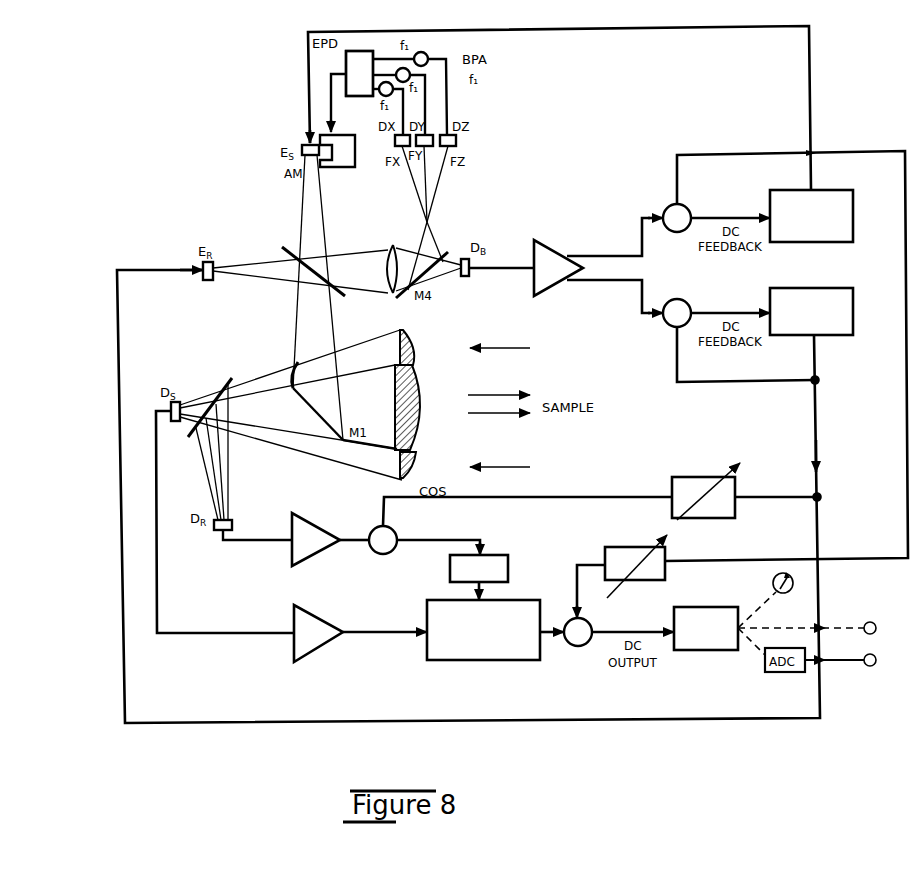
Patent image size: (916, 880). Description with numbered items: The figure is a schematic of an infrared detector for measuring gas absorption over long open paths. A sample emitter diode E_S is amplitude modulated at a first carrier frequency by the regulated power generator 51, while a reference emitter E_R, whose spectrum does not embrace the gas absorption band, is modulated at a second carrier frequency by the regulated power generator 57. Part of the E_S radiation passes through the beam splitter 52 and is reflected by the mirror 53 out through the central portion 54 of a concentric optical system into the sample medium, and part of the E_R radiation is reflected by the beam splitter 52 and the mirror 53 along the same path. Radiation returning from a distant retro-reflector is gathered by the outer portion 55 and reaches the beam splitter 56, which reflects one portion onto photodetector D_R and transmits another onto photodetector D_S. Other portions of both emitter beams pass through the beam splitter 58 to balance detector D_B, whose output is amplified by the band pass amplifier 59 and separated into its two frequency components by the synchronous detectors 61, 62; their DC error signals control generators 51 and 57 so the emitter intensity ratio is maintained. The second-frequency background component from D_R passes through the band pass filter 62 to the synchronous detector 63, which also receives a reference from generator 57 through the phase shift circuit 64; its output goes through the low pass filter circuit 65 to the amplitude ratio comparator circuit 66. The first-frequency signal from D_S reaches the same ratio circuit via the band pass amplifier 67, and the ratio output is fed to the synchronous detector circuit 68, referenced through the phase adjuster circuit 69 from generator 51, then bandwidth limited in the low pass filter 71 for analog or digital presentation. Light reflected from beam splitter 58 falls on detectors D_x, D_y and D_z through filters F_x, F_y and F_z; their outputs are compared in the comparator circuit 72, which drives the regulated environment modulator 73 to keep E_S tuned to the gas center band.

The regulated power generator 51 is at (786, 186).
The beam splitter 52 is at (293, 249).
The mirror 53 is at (289, 365).
The central portion of concentric optical system 54 is at (420, 442).
The outer portion of concentric optical system 55 is at (422, 341).
The beam splitter 56 is at (222, 380).
The regulated power generator 57 is at (848, 288).
The beam splitter 58 is at (435, 254).
The band pass amplifier 59 is at (542, 245).
The synchronous detector 61 is at (666, 212).
The synchronous detector / f2 band pass filter 62 is at (671, 302).
The synchronous detector 63 is at (393, 531).
The phase shift circuit 64 is at (694, 475).
The low pass filter circuit 65 is at (497, 554).
The amplitude ratio comparator circuit 66 is at (512, 600).
The f1 band pass amplifier 67 is at (305, 610).
The synchronous detector circuit 68 is at (568, 645).
The phase adjuster circuit 69 is at (637, 546).
The low pass filter 71 is at (698, 607).
The comparator circuit 72 is at (365, 96).
The regulated environment modulator 73 is at (340, 168).